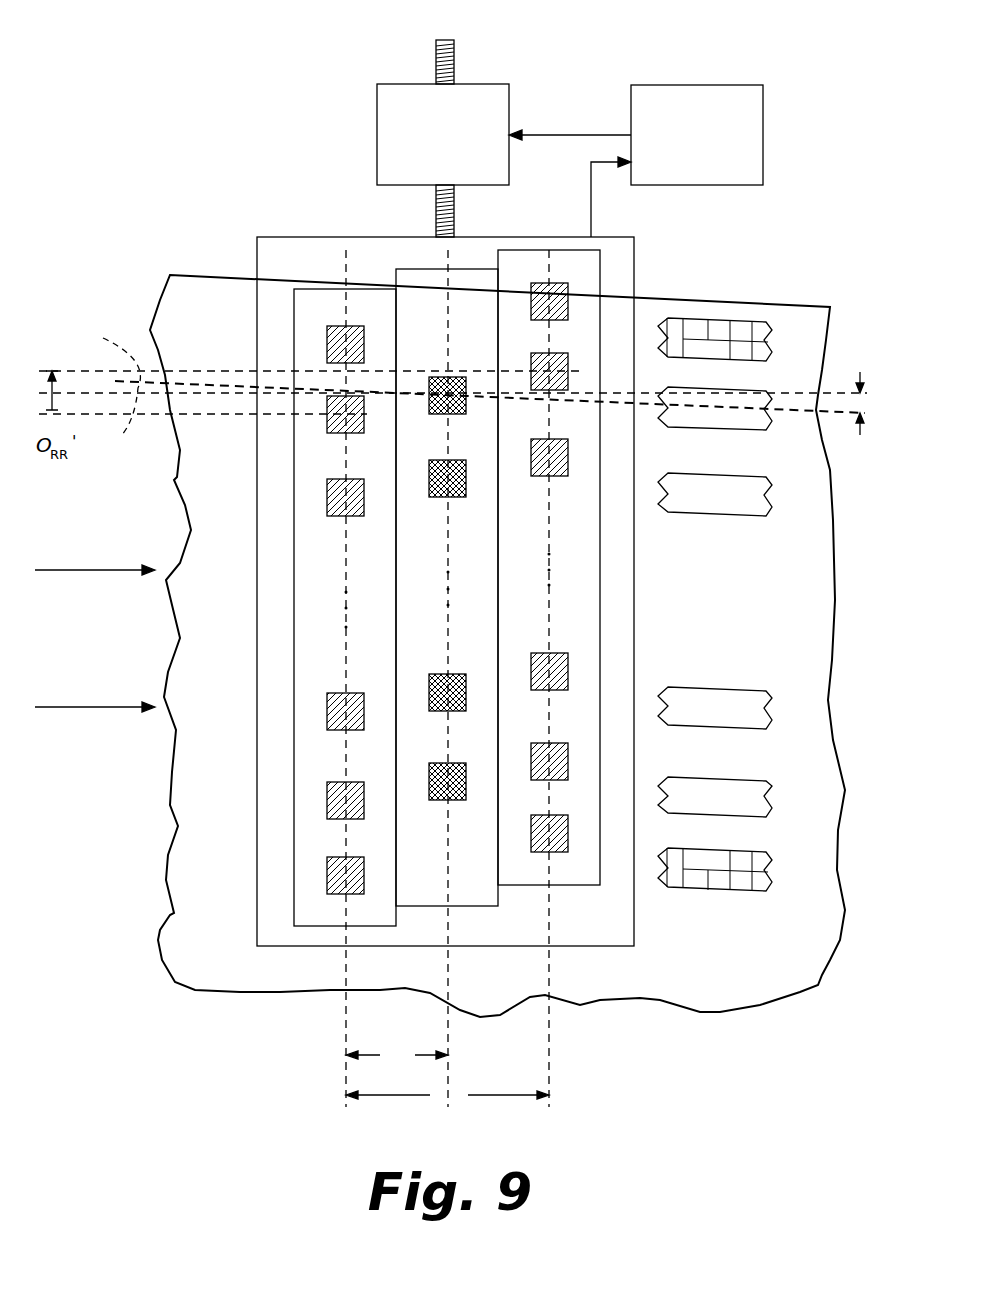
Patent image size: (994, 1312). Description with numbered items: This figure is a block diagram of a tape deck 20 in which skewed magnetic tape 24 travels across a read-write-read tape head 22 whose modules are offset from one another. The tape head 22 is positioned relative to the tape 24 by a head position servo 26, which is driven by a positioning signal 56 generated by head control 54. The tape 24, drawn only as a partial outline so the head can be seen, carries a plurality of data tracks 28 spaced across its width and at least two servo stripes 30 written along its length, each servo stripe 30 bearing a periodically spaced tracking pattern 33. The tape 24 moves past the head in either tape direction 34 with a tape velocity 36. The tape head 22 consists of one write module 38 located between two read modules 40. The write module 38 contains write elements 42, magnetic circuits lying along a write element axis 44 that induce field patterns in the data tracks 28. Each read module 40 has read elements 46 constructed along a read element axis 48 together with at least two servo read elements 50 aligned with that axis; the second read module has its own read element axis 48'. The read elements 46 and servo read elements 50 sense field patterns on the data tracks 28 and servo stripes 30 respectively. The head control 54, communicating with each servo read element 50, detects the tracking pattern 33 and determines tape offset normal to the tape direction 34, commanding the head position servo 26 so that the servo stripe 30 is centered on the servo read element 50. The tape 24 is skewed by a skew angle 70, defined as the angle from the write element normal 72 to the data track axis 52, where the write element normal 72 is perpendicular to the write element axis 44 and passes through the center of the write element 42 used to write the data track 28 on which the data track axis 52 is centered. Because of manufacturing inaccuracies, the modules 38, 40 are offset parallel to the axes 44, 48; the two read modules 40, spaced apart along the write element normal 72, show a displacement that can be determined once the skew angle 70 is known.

The tape deck 20 is at (150, 118).
The tape head 22 is at (306, 236).
The magnetic tape 24 is at (833, 318).
The head position servo 26 is at (483, 82).
The data tracks 28 is at (722, 429).
The servo stripes 30 is at (722, 358).
The tracking pattern 33 is at (737, 298).
The tape direction 34 is at (98, 573).
The tape velocity 36 is at (98, 710).
The write module 38 is at (426, 906).
The read modules 40 is at (320, 926).
The write elements 42 is at (440, 414).
The write element axis 44 is at (448, 1040).
The read elements 46 is at (340, 433).
The read element axis 48 is at (310, 678).
The read element axis 48' is at (487, 679).
The servo read elements 50 is at (340, 326).
The data track axis 52 is at (107, 382).
The head control 54 is at (712, 83).
The positioning signal 56 is at (552, 132).
The skew angle 70 is at (858, 400).
The write element normal 72 is at (487, 421).